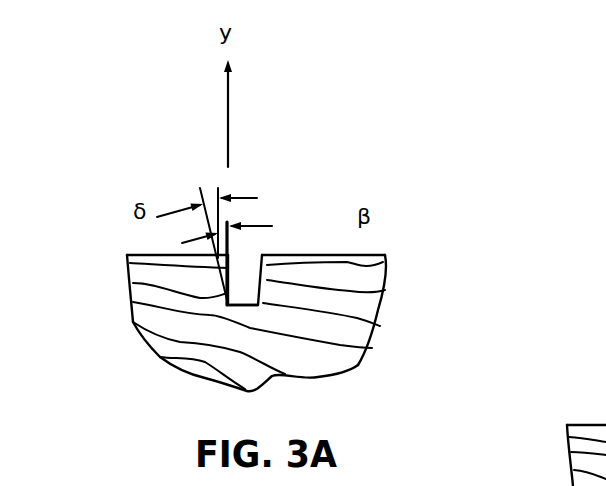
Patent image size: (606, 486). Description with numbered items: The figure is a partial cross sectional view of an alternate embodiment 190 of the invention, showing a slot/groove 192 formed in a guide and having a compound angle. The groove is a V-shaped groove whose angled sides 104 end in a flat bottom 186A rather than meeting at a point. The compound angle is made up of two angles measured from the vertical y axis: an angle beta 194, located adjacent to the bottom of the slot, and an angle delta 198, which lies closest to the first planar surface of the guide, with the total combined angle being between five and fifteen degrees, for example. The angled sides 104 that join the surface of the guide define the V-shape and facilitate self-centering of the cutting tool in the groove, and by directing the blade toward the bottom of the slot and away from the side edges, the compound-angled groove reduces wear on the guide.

The embodiment 190 is at (448, 190).
The flat bottom 186A is at (254, 318).
The slot/groove 192 is at (258, 165).
The angle β (beta) 194 is at (277, 212).
The angle δ (delta) 198 is at (146, 244).
The angled sides 104 is at (605, 385).